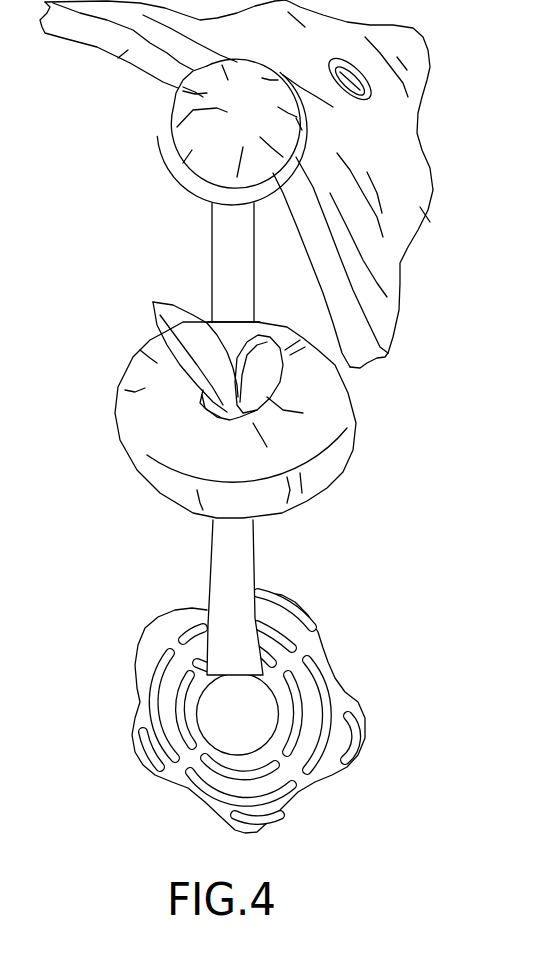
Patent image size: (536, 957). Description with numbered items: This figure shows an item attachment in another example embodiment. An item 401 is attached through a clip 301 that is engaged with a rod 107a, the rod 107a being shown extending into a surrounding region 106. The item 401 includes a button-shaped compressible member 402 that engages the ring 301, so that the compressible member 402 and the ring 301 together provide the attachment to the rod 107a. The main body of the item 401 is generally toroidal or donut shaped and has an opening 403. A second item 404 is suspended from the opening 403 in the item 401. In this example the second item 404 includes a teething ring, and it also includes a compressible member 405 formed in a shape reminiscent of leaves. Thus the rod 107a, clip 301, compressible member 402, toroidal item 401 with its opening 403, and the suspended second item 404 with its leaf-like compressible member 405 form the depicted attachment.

The rod 107a is at (162, 47).
The tissue 106 is at (380, 184).
The button-shaped compressible member 402 is at (274, 123).
The clip 301 is at (201, 141).
The item 401 is at (204, 420).
The opening 403 is at (175, 409).
The compressible member 405 is at (323, 378).
The second item 404 is at (268, 713).